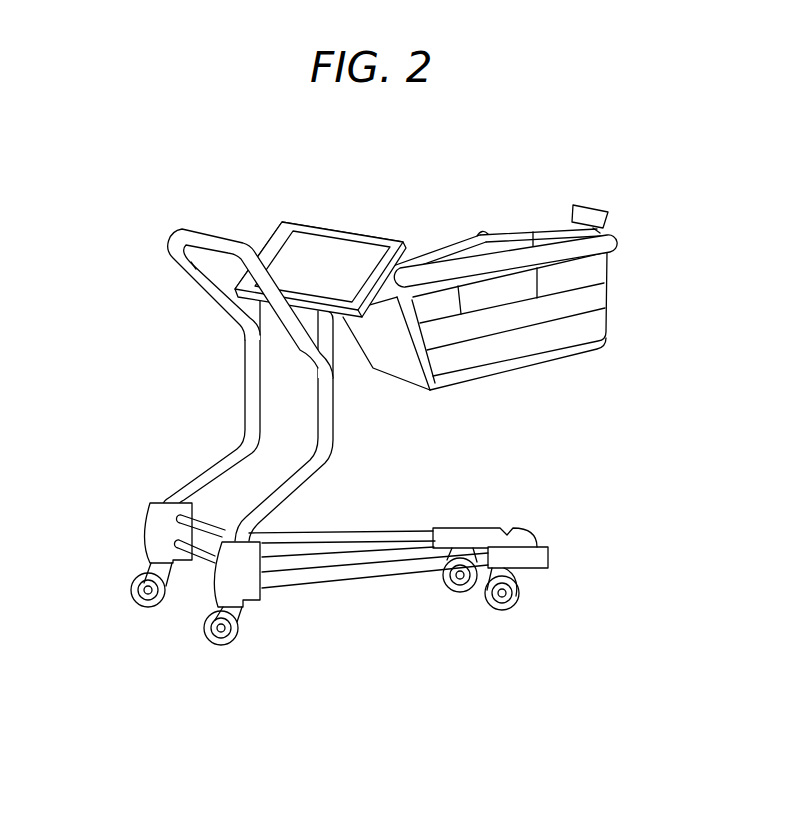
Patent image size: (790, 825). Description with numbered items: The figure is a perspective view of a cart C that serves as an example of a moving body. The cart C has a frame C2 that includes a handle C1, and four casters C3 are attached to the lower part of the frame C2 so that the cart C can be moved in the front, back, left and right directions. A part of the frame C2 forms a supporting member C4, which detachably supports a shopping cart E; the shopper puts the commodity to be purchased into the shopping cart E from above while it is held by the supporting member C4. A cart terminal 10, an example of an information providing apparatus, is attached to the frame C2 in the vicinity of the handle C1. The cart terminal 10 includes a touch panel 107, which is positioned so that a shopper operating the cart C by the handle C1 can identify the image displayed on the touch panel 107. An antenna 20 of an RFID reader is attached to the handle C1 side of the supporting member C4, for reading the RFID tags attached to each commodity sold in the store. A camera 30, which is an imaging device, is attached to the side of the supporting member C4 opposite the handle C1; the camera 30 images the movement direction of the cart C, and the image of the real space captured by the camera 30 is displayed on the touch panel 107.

The cart C is at (110, 168).
The handle C1 is at (185, 228).
The frame C2 is at (241, 381).
The casters C3 is at (133, 604).
The supporting member C4 is at (523, 228).
The cart terminal 10 is at (377, 227).
The touch panel 107 is at (310, 222).
The antenna 20 is at (397, 373).
The camera 30 is at (598, 204).
The shopping cart E is at (607, 298).